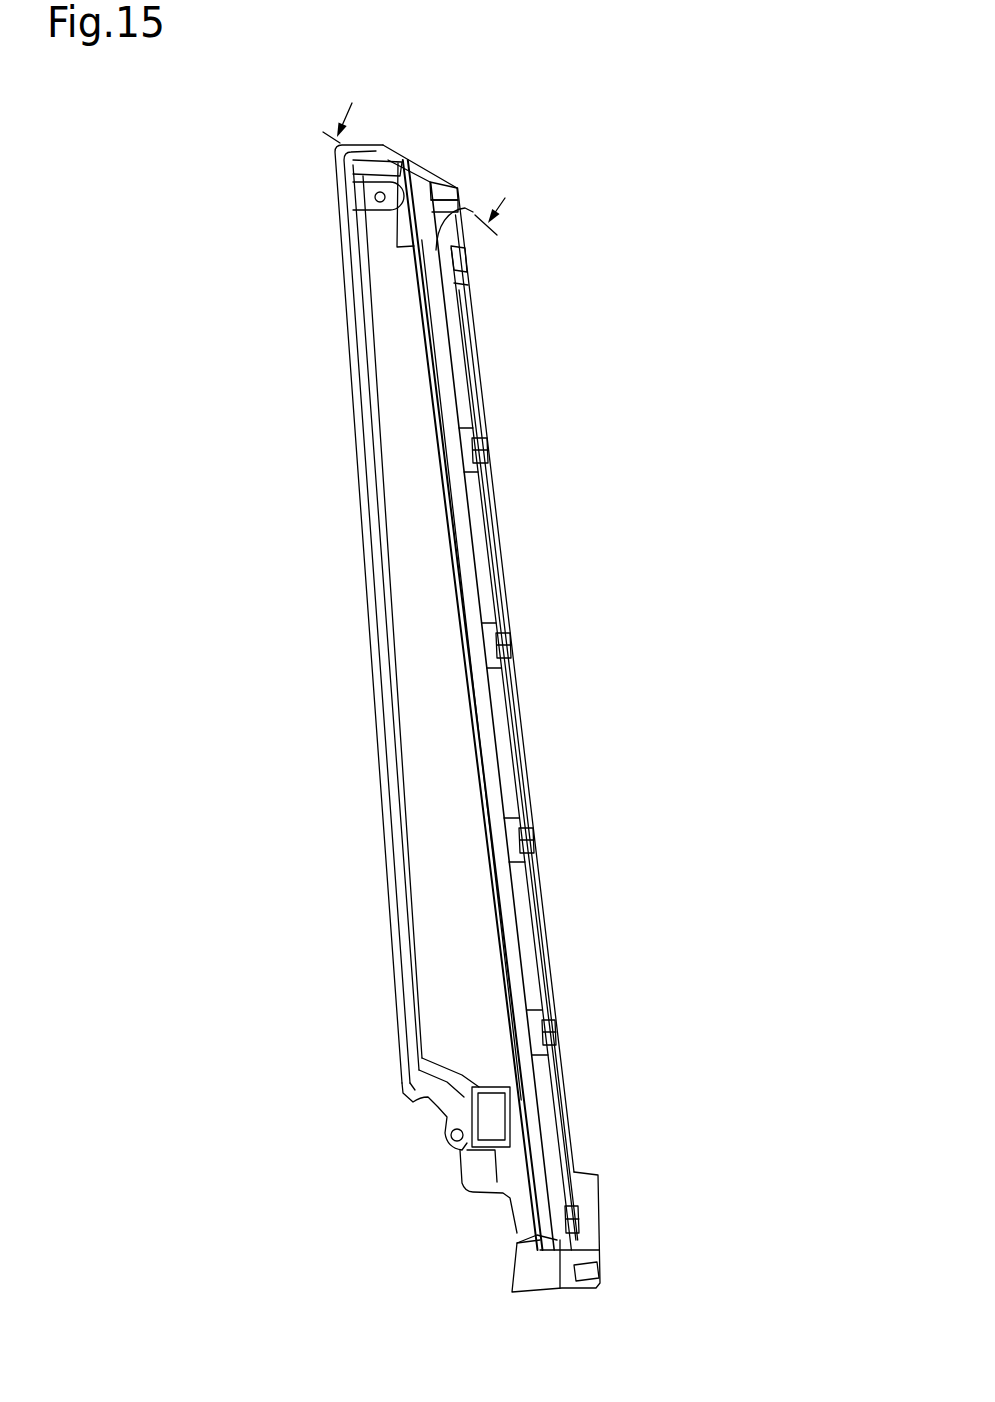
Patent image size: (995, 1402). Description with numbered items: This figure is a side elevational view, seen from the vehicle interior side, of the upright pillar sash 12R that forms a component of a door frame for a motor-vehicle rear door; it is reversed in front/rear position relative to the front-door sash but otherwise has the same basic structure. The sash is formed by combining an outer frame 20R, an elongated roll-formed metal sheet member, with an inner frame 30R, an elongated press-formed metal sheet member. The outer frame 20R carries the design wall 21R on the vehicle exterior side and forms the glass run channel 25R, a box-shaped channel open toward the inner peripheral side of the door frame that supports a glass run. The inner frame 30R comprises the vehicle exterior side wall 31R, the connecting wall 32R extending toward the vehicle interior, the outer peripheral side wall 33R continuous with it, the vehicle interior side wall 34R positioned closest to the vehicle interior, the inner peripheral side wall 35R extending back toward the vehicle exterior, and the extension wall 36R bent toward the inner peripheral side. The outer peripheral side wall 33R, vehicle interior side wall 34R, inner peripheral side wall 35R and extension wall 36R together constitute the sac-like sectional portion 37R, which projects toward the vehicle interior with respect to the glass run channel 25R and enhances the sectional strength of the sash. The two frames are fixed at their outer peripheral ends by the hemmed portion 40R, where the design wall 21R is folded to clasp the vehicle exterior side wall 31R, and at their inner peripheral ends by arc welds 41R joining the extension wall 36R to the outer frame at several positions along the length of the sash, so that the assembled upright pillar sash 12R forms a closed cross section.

The upright pillar sash 12R is at (314, 169).
The outer frame 20R is at (453, 164).
The glass run channel 25R is at (420, 178).
The design wall 21R is at (432, 163).
The inner frame 30R is at (451, 1045).
The vehicle exterior side wall 31R is at (437, 857).
The connecting wall 32R is at (468, 689).
The outer peripheral side wall 33R is at (475, 705).
The vehicle interior side wall 34R is at (494, 742).
The inner peripheral side wall 35R is at (474, 537).
The extension wall 36R is at (536, 917).
The sac-like sectional portion 37R is at (478, 953).
The hemmed portion 40R is at (363, 562).
The arc weld 41R is at (488, 458).